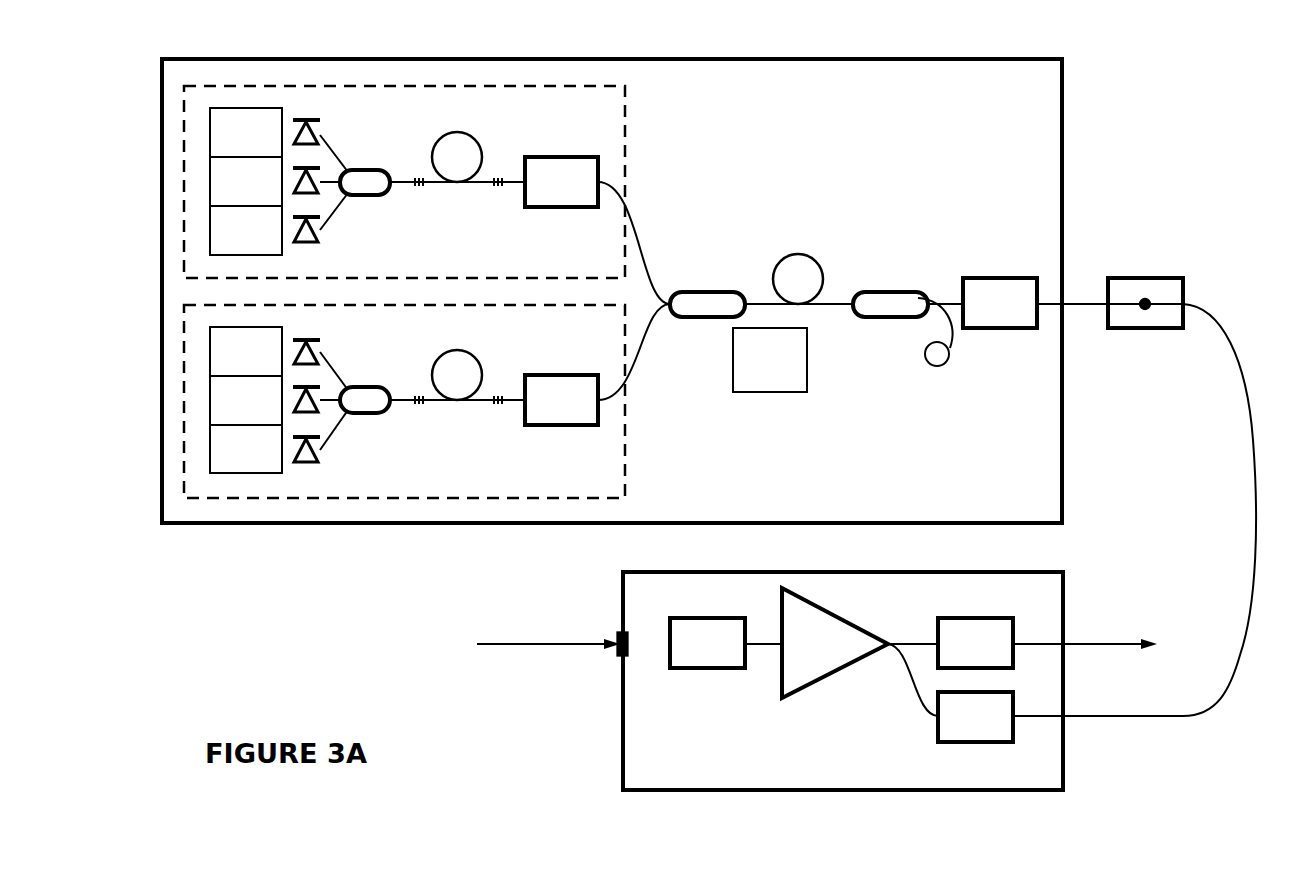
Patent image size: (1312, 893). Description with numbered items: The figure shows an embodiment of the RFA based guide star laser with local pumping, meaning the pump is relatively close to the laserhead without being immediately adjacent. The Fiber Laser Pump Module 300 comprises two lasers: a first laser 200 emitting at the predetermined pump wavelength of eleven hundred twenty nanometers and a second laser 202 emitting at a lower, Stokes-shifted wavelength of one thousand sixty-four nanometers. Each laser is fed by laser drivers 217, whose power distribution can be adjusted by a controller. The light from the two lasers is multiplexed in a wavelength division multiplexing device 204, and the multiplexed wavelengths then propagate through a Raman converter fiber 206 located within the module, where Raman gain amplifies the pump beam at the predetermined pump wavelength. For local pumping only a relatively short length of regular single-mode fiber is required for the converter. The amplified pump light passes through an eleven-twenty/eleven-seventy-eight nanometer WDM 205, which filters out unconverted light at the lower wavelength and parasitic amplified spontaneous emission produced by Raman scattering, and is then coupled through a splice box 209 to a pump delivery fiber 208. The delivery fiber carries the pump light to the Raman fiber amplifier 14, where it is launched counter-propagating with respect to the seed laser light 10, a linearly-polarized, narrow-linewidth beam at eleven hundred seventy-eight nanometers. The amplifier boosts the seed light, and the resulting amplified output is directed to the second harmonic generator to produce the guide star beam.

The Fiber Laser Pump Module 300 is at (635, 318).
The first laser 200 is at (404, 182).
The second laser 202 is at (404, 401).
The laser drivers 217 is at (339, 339).
The wavelength division multiplexing device 204 is at (707, 265).
The 1120/1178-nm WDM 205 is at (916, 292).
The Raman converter fiber 206 is at (805, 250).
The splice box 209 is at (1164, 274).
The pump delivery fiber 208 is at (1224, 332).
The Raman fiber amplifier 14 is at (892, 664).
The seed laser light 10 is at (548, 678).